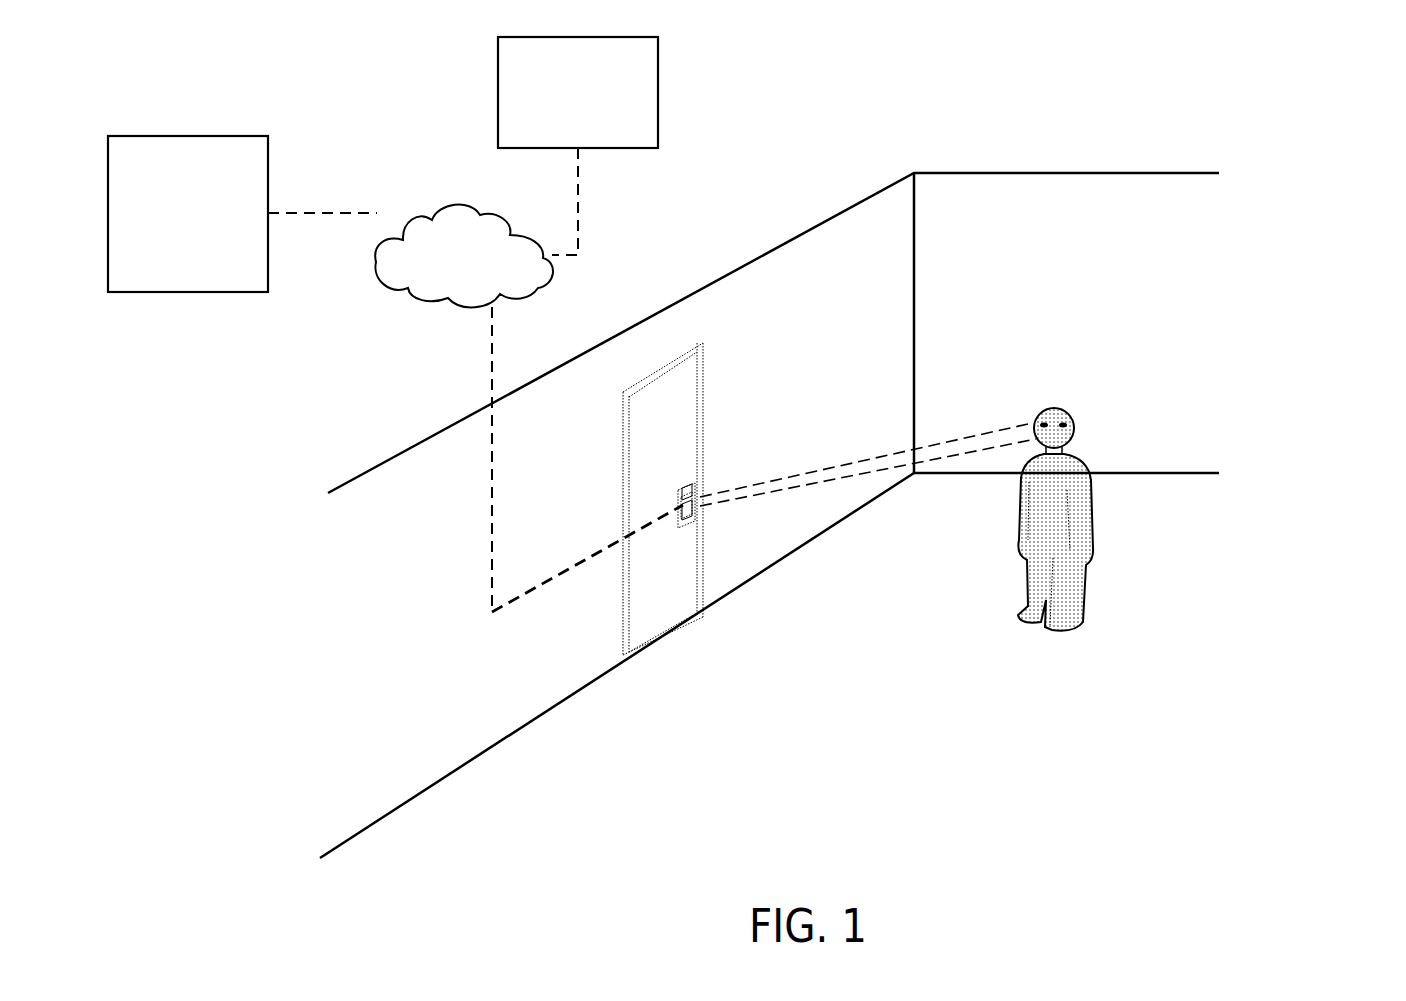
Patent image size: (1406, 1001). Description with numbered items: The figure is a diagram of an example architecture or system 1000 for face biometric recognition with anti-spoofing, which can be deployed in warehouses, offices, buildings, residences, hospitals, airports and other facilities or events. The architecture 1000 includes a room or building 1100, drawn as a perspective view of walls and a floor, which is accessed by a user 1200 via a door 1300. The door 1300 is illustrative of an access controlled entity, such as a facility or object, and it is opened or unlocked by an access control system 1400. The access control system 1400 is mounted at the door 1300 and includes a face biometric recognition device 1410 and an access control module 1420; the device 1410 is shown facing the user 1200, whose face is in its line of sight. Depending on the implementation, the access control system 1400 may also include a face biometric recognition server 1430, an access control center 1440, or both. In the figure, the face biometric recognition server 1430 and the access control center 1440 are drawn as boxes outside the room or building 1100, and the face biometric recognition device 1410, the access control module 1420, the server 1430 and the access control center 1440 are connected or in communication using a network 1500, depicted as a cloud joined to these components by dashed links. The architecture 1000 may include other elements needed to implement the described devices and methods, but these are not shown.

The architecture or system 1000 is at (1230, 76).
The room or building 1100 is at (274, 400).
The user 1200 is at (1157, 619).
The door 1300 is at (688, 428).
The access control system 1400 is at (686, 575).
The face biometric recognition device 1410 is at (691, 475).
The access control module 1420 is at (696, 510).
The face biometric recognition server 1430 is at (242, 214).
The access control center 1440 is at (578, 146).
The network 1500 is at (432, 333).